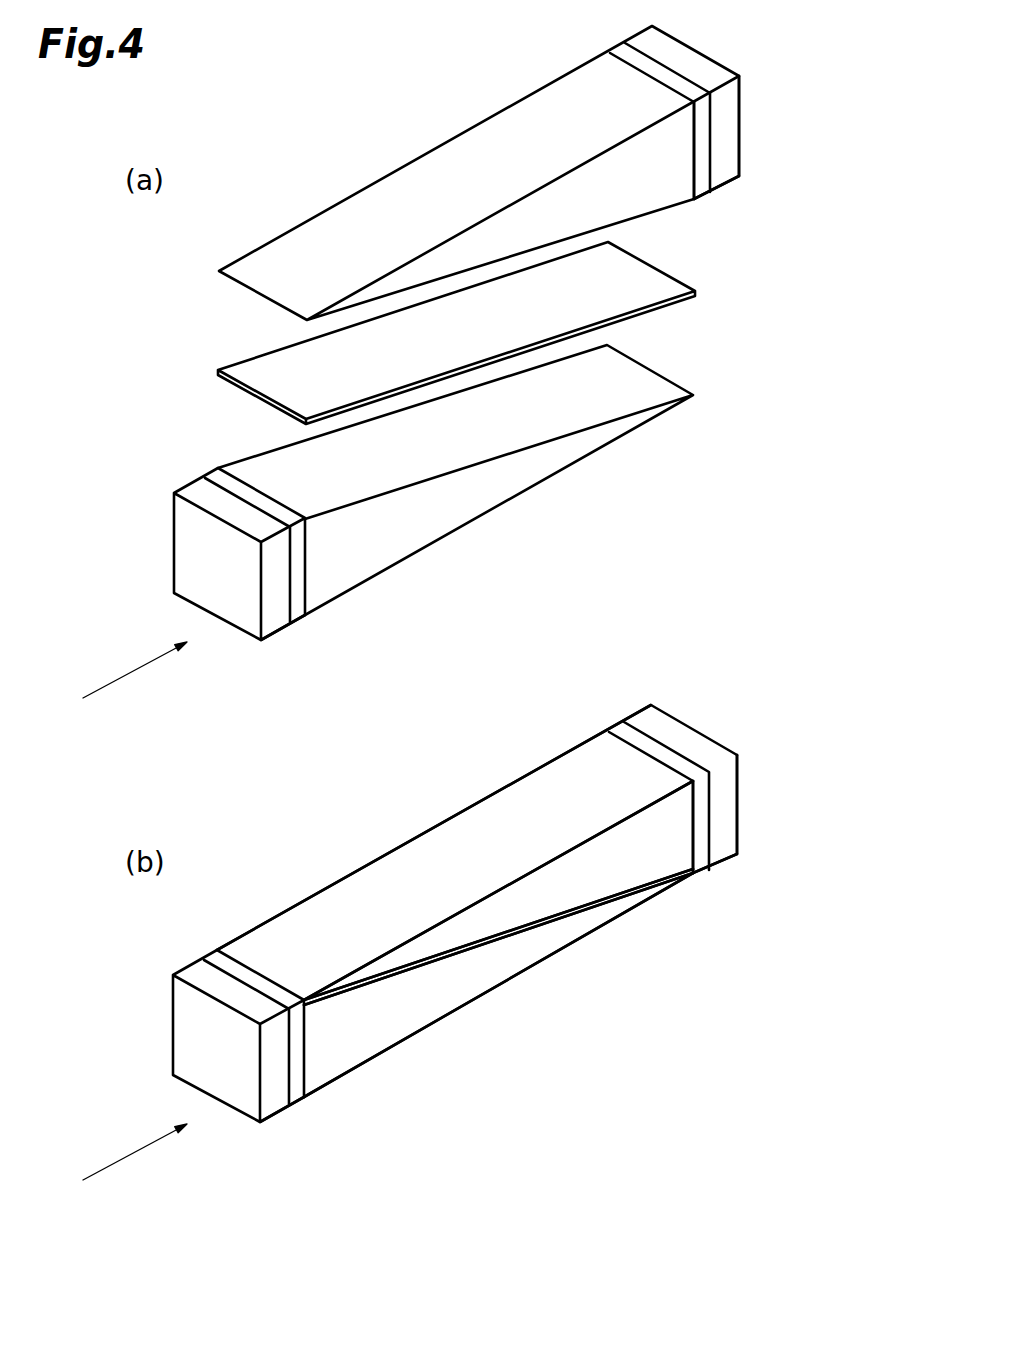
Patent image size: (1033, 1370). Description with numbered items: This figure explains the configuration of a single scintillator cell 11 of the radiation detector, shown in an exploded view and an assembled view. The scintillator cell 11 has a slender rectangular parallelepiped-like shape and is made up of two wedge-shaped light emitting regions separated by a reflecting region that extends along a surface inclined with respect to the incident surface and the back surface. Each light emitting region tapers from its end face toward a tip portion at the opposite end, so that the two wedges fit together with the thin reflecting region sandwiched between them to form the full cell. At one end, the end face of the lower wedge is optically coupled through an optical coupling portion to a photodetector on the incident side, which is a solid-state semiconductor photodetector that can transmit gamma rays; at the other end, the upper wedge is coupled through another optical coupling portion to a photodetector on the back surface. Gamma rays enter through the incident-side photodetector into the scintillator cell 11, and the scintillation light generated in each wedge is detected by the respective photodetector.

The scintillator cell 11 is at (490, 770).